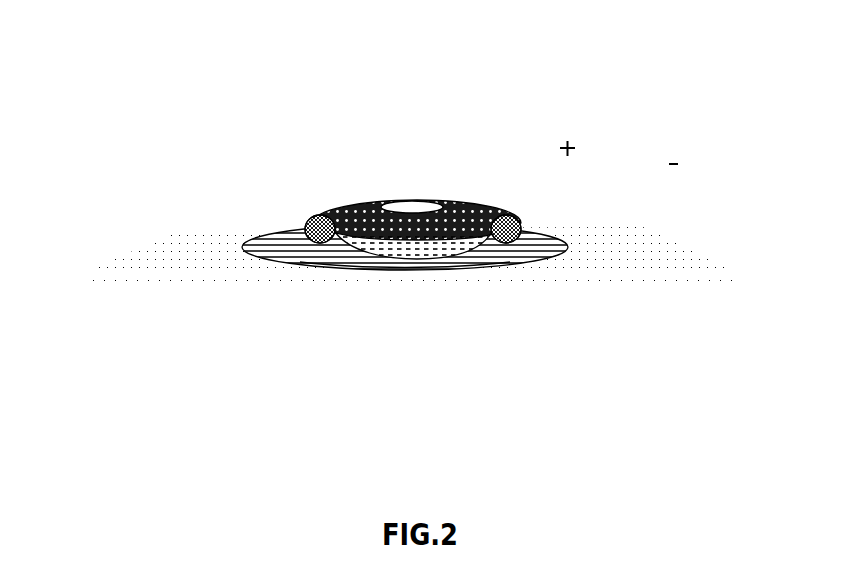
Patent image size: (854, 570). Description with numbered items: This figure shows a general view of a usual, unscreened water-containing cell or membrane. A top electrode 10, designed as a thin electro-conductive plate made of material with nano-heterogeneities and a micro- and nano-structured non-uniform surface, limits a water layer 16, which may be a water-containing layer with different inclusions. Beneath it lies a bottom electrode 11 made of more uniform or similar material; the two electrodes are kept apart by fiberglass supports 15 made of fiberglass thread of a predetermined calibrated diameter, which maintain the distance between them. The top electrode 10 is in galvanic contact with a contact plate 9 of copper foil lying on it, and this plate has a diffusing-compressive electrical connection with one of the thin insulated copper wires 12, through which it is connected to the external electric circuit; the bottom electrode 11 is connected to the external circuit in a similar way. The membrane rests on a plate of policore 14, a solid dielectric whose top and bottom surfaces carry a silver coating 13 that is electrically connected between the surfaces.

The contact plate 9 is at (398, 197).
The top electrode 10 is at (362, 210).
The bottom electrode 11 is at (267, 242).
The thin insulated copper wires 12 is at (420, 200).
The silver coating 13 is at (650, 255).
The plate of policore 14 is at (287, 290).
The fiberglass supports 15 is at (503, 233).
The water layer 16 is at (480, 270).